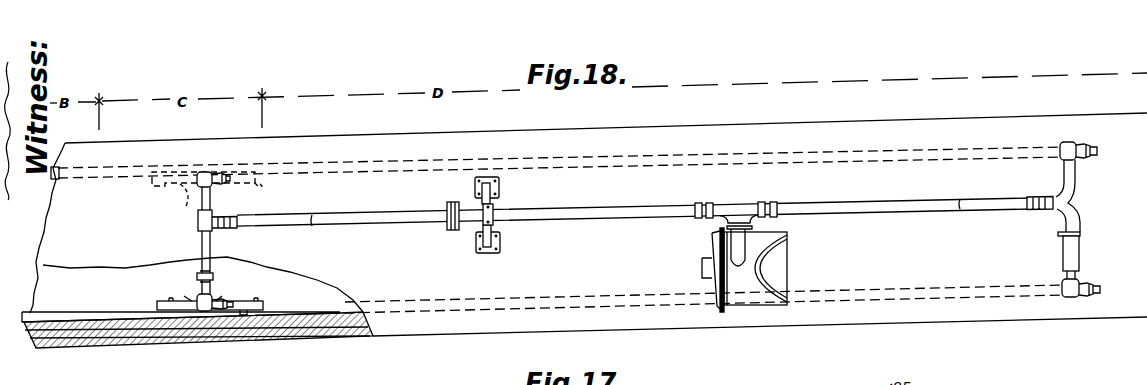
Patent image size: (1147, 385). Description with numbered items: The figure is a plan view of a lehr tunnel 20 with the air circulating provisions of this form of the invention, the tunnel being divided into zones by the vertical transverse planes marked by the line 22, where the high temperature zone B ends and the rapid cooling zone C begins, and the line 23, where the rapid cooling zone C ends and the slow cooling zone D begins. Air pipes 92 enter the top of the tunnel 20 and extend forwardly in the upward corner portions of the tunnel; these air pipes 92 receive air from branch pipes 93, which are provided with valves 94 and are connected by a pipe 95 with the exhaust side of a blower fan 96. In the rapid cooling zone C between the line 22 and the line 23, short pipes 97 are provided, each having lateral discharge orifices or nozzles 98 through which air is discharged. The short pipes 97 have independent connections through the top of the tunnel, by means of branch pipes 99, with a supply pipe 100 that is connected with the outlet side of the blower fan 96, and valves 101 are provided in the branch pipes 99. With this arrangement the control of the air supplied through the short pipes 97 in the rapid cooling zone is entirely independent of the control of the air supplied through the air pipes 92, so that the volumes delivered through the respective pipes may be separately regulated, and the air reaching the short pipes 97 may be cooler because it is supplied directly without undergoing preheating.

The tank 20 is at (681, 126).
The line 22 is at (101, 128).
The line 23 is at (264, 128).
The air pipes 92 is at (904, 146).
The branch pipes 93 is at (1073, 170).
The valves 94 is at (1097, 145).
The pipe 95 is at (888, 212).
The blower fan 96 is at (780, 254).
The short pipes 97 is at (173, 184).
The lateral discharge orifices or nozzles 98 is at (262, 186).
The branch pipes 99 is at (210, 193).
The supply pipe 100 is at (326, 226).
The valves 101 is at (211, 172).